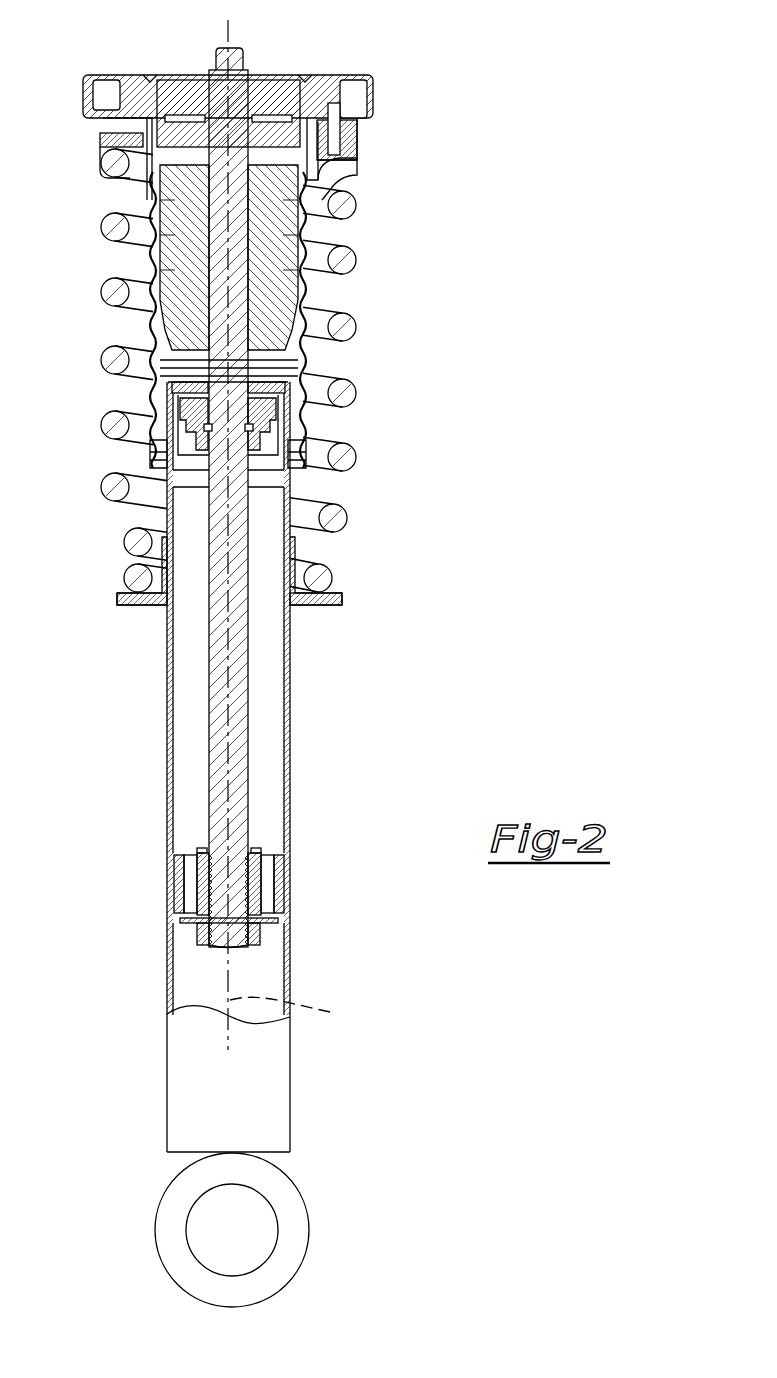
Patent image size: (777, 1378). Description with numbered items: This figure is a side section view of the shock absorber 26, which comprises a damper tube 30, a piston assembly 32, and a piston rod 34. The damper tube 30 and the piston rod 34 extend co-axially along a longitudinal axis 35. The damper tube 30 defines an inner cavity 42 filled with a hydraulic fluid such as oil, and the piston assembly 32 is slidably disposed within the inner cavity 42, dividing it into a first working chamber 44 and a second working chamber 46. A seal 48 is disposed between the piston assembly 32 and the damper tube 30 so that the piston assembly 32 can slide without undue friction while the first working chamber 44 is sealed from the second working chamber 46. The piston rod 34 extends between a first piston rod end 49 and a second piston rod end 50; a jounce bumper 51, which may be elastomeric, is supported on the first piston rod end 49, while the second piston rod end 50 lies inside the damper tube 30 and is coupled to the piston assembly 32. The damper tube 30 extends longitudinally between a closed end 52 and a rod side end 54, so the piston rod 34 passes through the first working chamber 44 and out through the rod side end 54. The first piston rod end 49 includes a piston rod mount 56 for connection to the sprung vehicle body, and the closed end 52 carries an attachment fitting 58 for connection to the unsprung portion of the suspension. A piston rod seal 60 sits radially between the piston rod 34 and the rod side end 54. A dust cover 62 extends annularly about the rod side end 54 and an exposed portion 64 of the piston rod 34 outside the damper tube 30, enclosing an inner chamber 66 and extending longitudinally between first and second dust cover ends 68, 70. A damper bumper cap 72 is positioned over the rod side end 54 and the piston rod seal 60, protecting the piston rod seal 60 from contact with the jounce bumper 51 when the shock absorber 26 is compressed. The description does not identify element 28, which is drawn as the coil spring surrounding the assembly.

The shock absorber 26 is at (468, 74).
The coil spring 28 is at (105, 221).
The damper tube 30 is at (287, 735).
The piston assembly 32 is at (158, 928).
The piston rod 34 is at (220, 727).
The longitudinal axis 35 is at (296, 1013).
The inner cavity 42 is at (262, 816).
The first working chamber 44 is at (205, 606).
The second working chamber 46 is at (268, 965).
The seal 48 is at (175, 868).
The first piston rod end 49 is at (237, 143).
The second piston rod end 50 is at (220, 927).
The jounce bumper 51 is at (300, 220).
The closed end 52 is at (260, 1110).
The rod side end 54 is at (300, 428).
The piston rod mount 56 is at (131, 88).
The attachment fitting 58 is at (280, 1200).
The piston rod seal 60 is at (262, 445).
The dust cover 62 is at (310, 290).
The exposed portion 64 is at (165, 365).
The inner chamber 66 is at (292, 373).
The first dust cover end 68 is at (308, 135).
The second dust cover end 70 is at (155, 433).
The damper bumper cap 72 is at (153, 388).